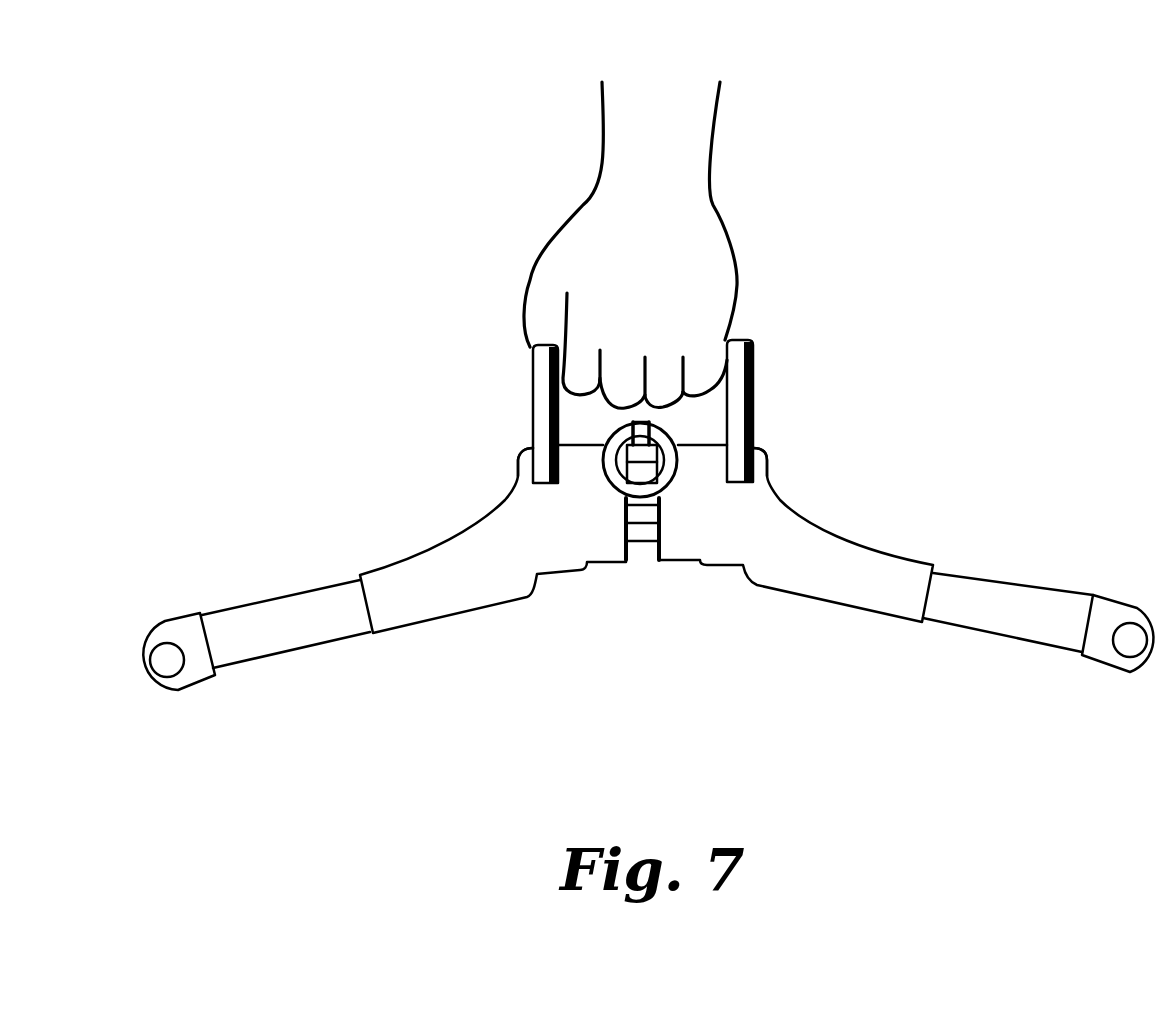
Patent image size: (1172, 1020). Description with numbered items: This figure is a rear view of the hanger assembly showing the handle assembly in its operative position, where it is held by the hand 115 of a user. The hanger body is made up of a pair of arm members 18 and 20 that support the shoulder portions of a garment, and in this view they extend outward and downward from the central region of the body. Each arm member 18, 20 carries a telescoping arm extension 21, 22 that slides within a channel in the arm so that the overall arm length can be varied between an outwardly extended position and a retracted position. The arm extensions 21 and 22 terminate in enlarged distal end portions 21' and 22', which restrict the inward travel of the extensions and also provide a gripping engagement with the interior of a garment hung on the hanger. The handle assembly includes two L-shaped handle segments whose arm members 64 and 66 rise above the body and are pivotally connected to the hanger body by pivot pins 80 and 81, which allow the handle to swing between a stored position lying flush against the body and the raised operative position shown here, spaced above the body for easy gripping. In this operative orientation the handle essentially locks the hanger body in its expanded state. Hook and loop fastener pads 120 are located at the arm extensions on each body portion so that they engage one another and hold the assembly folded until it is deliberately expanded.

The hand 115 is at (712, 140).
The arm member 64 is at (531, 402).
The arm member 66 is at (753, 390).
The pivot pin 80 is at (516, 467).
The pivot pin 81 is at (766, 462).
The arm member 18 is at (457, 614).
The arm member 20 is at (836, 606).
The arm extension 21 is at (286, 636).
The arm extension 22 is at (995, 634).
The distal end portion 21' is at (207, 682).
The distal end portion 22' is at (1081, 670).
The hook and loop fastener pads 120 is at (158, 648).